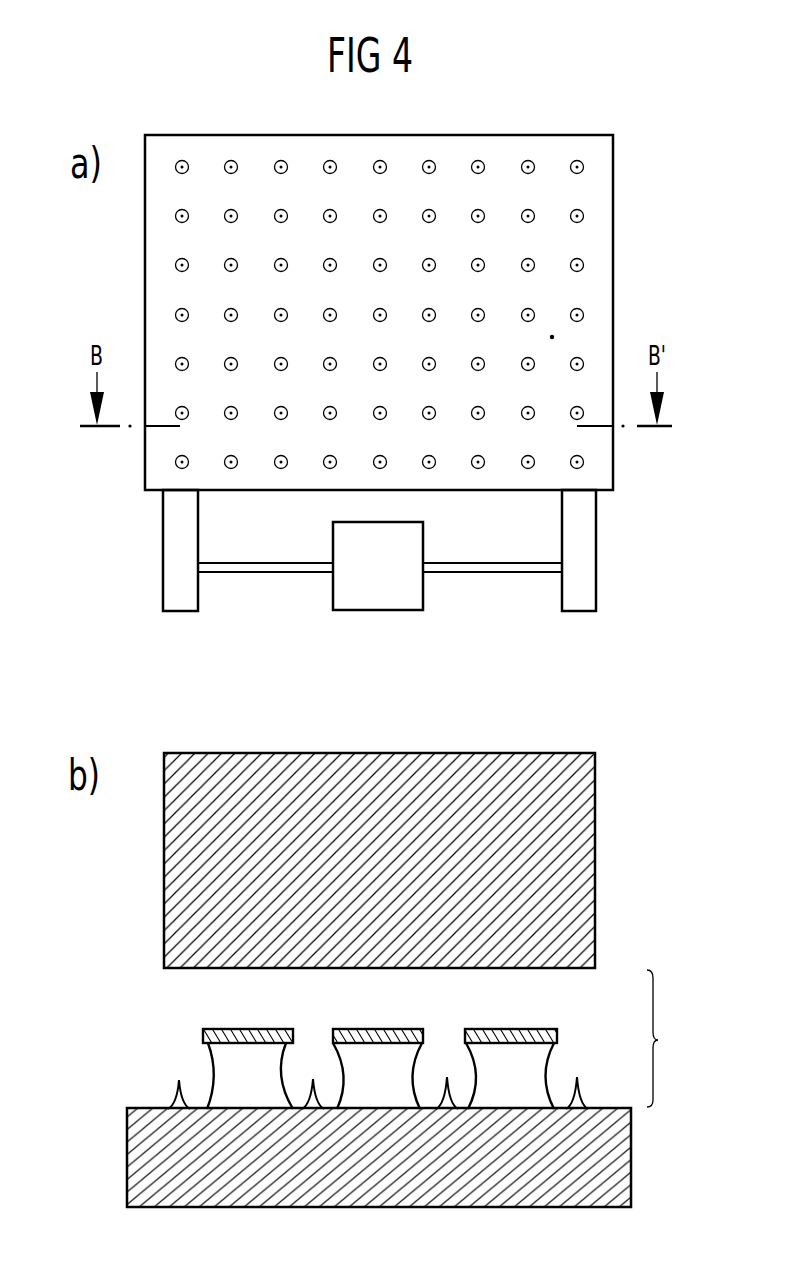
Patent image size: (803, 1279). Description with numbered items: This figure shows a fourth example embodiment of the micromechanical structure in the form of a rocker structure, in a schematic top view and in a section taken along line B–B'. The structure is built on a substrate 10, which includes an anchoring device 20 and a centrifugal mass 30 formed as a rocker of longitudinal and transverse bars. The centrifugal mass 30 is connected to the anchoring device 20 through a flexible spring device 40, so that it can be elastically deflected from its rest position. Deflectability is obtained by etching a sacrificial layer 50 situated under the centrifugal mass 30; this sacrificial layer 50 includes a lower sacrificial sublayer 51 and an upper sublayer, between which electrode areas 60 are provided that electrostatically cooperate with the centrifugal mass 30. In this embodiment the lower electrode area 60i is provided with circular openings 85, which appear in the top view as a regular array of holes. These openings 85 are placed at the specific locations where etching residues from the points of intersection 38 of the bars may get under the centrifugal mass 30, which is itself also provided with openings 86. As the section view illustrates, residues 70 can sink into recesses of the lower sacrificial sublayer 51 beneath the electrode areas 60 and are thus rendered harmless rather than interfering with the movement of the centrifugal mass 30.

The substrate 10 is at (622, 1157).
The anchoring device 20 is at (380, 602).
The centrifugal mass 30 is at (585, 548).
The points of intersection 38 is at (552, 255).
The flexible spring device 40 is at (268, 568).
The sacrificial layer 50 is at (420, 1039).
The lower sacrificial sublayer 51 is at (227, 1080).
The electrode areas 60 is at (247, 1028).
The lower electrode area 60i is at (410, 588).
The residues 70 is at (172, 1098).
The circular openings 85 is at (528, 216).
The openings 86 is at (552, 337).